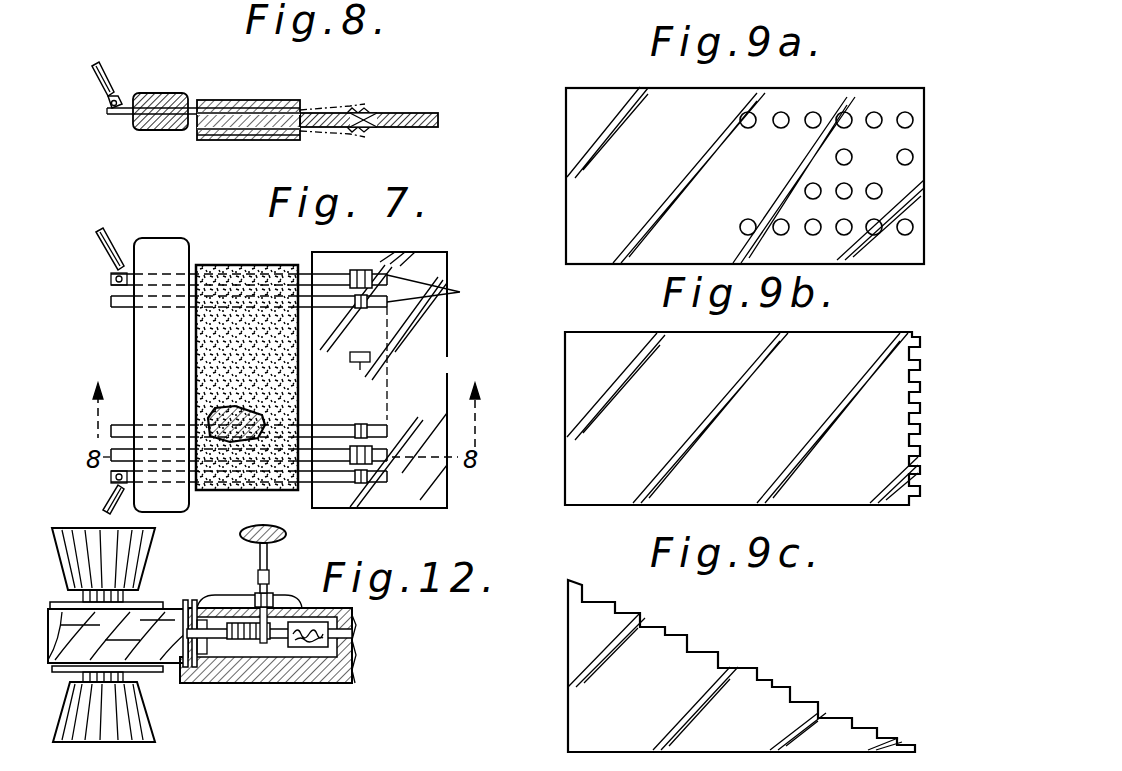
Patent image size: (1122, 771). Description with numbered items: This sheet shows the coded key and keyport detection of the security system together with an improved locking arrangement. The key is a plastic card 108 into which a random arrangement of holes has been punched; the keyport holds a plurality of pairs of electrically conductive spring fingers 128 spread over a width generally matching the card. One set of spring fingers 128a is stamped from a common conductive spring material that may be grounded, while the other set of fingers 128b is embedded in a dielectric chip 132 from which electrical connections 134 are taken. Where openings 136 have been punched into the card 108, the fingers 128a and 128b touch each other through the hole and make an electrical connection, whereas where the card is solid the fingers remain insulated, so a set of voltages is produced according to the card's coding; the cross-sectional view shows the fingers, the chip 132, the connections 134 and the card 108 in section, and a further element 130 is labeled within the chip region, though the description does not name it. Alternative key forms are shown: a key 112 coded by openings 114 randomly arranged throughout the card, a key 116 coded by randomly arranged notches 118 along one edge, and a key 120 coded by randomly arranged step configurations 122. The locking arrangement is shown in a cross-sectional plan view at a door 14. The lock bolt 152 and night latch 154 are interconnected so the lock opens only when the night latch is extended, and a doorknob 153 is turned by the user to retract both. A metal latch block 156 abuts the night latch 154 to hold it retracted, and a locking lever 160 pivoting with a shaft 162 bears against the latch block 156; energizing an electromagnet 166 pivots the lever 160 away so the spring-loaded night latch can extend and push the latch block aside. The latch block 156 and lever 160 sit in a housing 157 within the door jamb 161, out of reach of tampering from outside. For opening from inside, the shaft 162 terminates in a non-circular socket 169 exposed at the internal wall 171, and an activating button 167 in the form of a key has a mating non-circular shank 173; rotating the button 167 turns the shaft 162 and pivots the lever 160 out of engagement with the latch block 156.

In FIG. 8, the plastic card 108 is at (422, 128).
In FIG. 7, the plastic card 108 is at (427, 497).
In FIG. 9A, the key 112 is at (612, 110).
In FIG. 9A, the openings 114 is at (902, 114).
In FIG. 9B, the key 116 is at (612, 358).
In FIG. 9B, the notches 118 is at (925, 320).
In FIG. 9C, the key 120 is at (592, 637).
In FIG. 9C, the step configurations 122 is at (745, 667).
In FIG. 7, the spring fingers 128 is at (312, 262).
In FIG. 8, the spring fingers 128a is at (370, 134).
In FIG. 8, the fingers 128b is at (340, 111).
In FIG. 7, the fingers 128b is at (457, 289).
In FIG. 8, the mass 130 is at (213, 140).
In FIG. 7, the mass 130 is at (232, 440).
In FIG. 8, the dielectric chip 132 is at (253, 100).
In FIG. 7, the dielectric chip 132 is at (217, 290).
In FIG. 8, the electrical connections 134 is at (114, 84).
In FIG. 7, the electrical connections 134 is at (113, 240).
In FIG. 8, the openings 136 is at (394, 110).
In FIG. 7, the openings 136 is at (362, 447).
In FIG. 12, the door 14 is at (186, 603).
In FIG. 12, the lock bolt 152 is at (207, 660).
In FIG. 12, the doorknob 153 is at (132, 725).
In FIG. 12, the night latch 154 is at (192, 600).
In FIG. 12, the latch block 156 is at (227, 620).
In FIG. 12, the housing 157 is at (255, 642).
In FIG. 12, the locking lever 160 is at (287, 657).
In FIG. 12, the door jamb 161 is at (352, 683).
In FIG. 12, the shaft 162 is at (318, 653).
In FIG. 12, the electromagnet 166 is at (352, 670).
In FIG. 12, the activating button 167 is at (288, 530).
In FIG. 12, the non-circular socket 169 is at (271, 595).
In FIG. 12, the internal wall 171 is at (246, 600).
In FIG. 12, the non-circular shank 173 is at (270, 575).